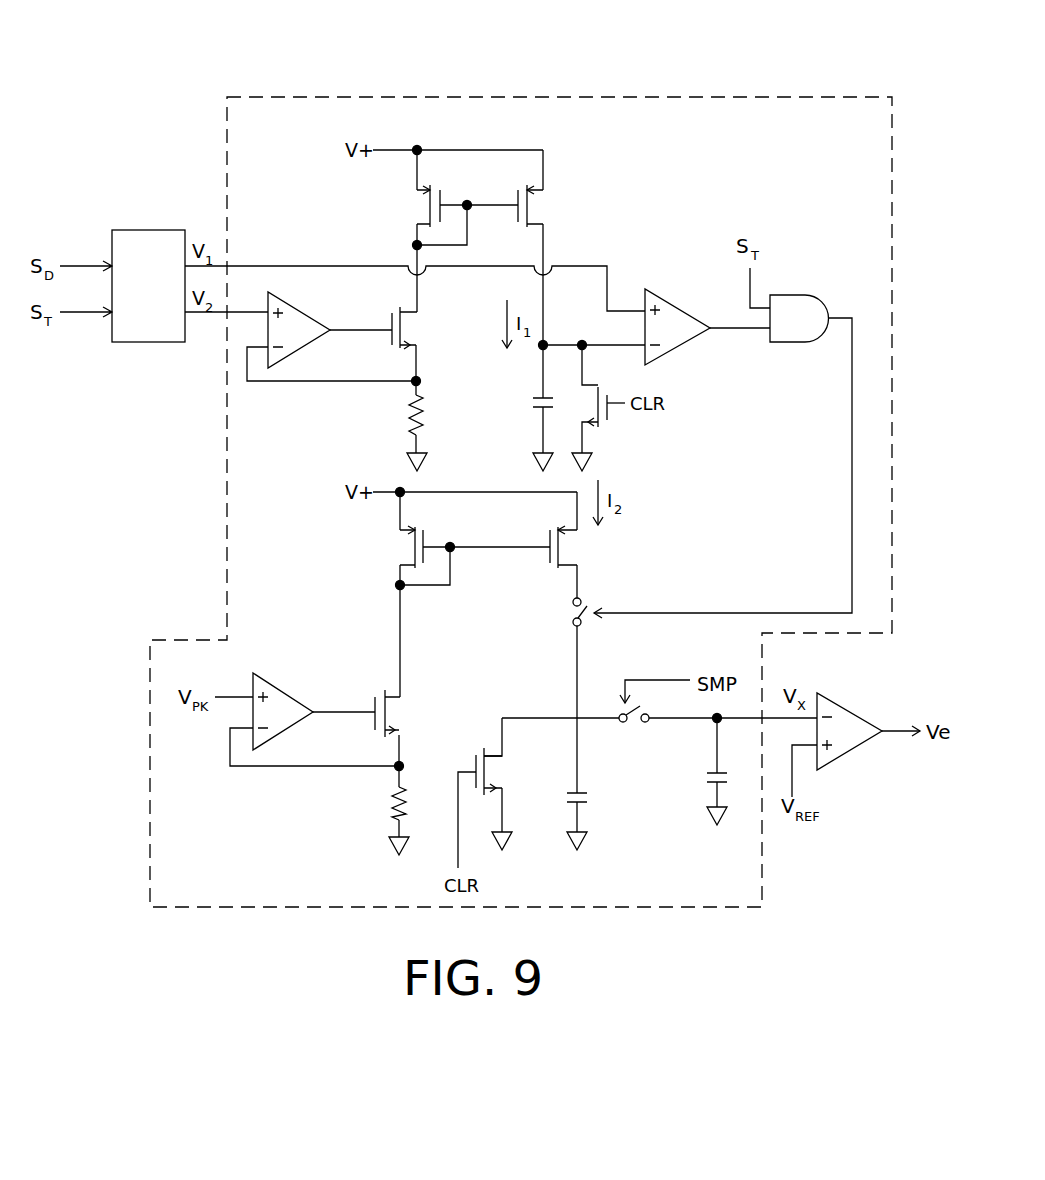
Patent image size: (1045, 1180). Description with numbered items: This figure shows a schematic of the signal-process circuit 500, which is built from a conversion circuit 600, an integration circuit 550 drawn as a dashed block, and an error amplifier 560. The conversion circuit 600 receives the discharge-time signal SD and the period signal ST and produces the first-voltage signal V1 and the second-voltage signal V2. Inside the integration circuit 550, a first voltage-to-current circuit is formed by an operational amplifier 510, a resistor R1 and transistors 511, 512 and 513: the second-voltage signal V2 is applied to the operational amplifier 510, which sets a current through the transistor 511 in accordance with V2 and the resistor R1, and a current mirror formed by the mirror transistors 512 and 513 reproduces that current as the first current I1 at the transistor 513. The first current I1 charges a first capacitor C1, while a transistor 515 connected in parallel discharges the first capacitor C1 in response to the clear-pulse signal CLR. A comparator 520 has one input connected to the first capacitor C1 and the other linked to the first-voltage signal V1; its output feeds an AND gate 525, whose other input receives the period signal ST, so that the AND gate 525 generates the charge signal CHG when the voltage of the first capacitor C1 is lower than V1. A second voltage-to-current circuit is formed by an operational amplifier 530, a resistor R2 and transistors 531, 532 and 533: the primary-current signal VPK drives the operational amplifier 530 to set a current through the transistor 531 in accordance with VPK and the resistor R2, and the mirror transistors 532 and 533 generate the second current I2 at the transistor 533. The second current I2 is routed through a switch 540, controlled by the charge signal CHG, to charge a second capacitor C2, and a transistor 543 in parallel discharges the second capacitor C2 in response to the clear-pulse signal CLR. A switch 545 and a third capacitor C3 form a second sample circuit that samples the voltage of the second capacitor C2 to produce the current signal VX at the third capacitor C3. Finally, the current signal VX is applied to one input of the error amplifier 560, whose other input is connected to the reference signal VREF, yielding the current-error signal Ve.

The signal-process circuit 500 is at (843, 965).
The integration circuit 550 is at (732, 97).
The conversion circuit 600 is at (142, 250).
The operational amplifier 510 is at (293, 305).
The transistor 511 is at (418, 329).
The mirror transistor 512 is at (428, 210).
The mirror transistor 513 is at (530, 204).
The transistor 515 is at (607, 418).
The comparator 520 is at (672, 301).
The AND gate 525 is at (788, 297).
The operational amplifier 530 is at (280, 688).
The transistor 531 is at (400, 716).
The mirror transistor 532 is at (413, 547).
The mirror transistor 533 is at (565, 548).
The switch 540 is at (560, 617).
The transistor 543 is at (490, 770).
The switch 545 is at (633, 727).
The error amplifier 560 is at (850, 708).
The resistor R1 is at (425, 420).
The resistor R2 is at (407, 807).
The first capacitor C1 is at (533, 397).
The second capacitor C2 is at (588, 794).
The third capacitor C3 is at (720, 770).